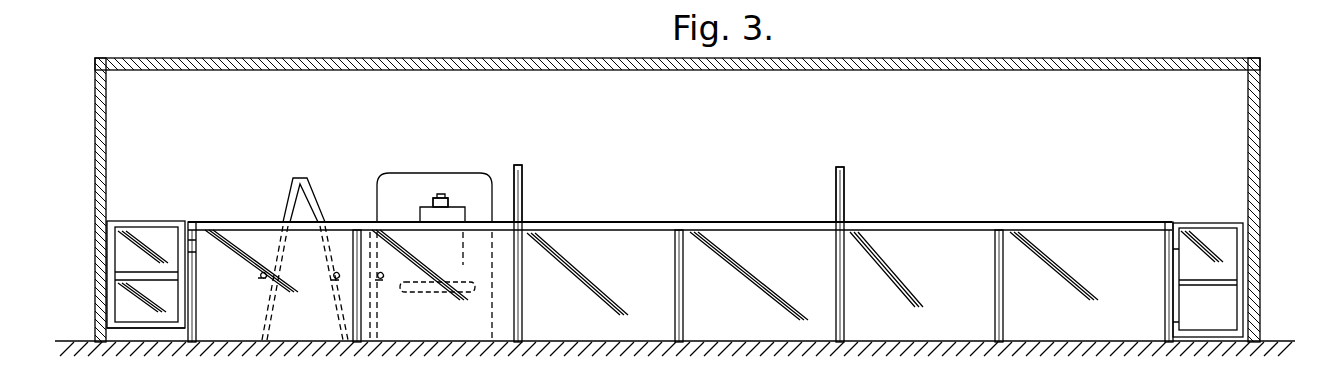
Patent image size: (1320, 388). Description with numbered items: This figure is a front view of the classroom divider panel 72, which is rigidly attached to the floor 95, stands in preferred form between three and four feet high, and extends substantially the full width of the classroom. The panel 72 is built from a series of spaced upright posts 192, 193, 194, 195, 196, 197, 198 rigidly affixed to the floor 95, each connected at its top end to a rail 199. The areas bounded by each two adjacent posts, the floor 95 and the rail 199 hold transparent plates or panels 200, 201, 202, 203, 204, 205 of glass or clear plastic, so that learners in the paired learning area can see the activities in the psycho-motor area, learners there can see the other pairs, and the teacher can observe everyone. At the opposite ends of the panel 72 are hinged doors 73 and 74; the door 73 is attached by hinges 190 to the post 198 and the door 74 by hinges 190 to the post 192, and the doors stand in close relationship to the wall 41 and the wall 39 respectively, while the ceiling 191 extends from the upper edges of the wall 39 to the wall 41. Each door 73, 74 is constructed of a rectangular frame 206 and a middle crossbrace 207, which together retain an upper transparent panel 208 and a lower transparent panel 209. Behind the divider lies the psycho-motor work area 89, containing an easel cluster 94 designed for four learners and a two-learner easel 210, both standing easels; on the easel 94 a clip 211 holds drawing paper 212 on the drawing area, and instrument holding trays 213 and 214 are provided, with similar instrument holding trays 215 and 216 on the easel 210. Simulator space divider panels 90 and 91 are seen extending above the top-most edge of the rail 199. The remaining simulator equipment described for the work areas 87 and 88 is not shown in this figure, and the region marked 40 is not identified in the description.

The wall 39 is at (95, 116).
The interior compartment 40 is at (1072, 159).
The wall 41 is at (1258, 100).
The divider panel 72 is at (620, 222).
The hinged door 73 is at (1215, 220).
The hinged door 74 is at (148, 218).
The work area 87 is at (1075, 100).
The work area 88 is at (607, 100).
The psycho-motor work area 89 is at (347, 93).
The simulator space divider panel 90 is at (845, 168).
The simulator space divider panel 91 is at (520, 168).
The easel cluster 94 is at (428, 173).
The floor 95 is at (762, 340).
The hinges 190 is at (190, 240).
The ceiling 191 is at (905, 68).
The upright post 192 is at (197, 330).
The upright post 193 is at (355, 330).
The upright post 194 is at (518, 330).
The upright post 195 is at (672, 340).
The upright post 196 is at (838, 340).
The upright post 197 is at (1000, 340).
The upright post 198 is at (1165, 286).
The rail 199 is at (922, 228).
The transparent plate 200 is at (242, 318).
The transparent plate 201 is at (368, 235).
The transparent plate 202 is at (596, 320).
The transparent plate 203 is at (758, 238).
The transparent plate 204 is at (930, 330).
The transparent plate 205 is at (1080, 238).
The rectangular frame 206 is at (124, 327).
The middle crossbrace 207 is at (130, 277).
The upper transparent panel 208 is at (105, 245).
The lower transparent panel 209 is at (123, 306).
The two-learner easel 210 is at (288, 190).
The clip 211 is at (445, 196).
The drawing paper 212 is at (465, 208).
The instrument holding tray 213 is at (383, 283).
The instrument holding tray 214 is at (437, 290).
The instrument holding tray 215 is at (258, 277).
The instrument holding tray 216 is at (333, 282).